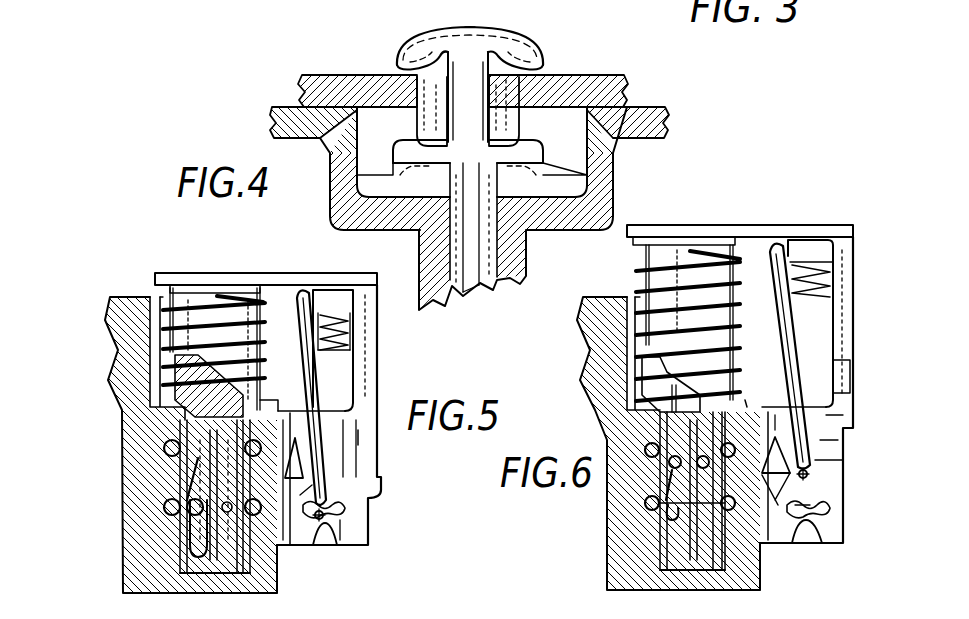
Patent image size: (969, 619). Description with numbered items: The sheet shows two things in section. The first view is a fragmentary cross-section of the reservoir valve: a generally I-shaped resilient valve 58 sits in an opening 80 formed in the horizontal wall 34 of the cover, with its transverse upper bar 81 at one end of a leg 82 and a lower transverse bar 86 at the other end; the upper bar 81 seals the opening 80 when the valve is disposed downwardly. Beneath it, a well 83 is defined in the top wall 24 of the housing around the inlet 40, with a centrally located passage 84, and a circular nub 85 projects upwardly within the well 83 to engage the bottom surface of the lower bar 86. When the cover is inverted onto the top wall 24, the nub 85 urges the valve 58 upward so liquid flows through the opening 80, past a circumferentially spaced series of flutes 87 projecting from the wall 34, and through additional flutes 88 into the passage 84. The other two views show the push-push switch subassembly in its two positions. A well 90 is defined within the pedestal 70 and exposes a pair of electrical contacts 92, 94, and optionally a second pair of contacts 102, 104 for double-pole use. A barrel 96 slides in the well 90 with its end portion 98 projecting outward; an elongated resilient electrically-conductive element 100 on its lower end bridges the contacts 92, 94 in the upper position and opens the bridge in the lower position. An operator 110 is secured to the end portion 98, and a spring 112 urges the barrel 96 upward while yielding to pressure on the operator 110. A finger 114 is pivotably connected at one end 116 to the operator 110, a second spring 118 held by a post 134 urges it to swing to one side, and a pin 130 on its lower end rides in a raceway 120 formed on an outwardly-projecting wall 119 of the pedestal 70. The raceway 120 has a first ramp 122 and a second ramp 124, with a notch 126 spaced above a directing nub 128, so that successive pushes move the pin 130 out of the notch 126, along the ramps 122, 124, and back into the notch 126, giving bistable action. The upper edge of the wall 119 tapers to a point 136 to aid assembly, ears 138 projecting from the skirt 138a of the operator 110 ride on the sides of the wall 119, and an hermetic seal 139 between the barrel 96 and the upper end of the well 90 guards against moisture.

In FIG. 4, the top wall 24 is at (650, 142).
In FIG. 4, the horizontal wall 34 is at (600, 75).
In FIG. 4, the inlet 40 is at (632, 107).
In FIG. 4, the valve 58 is at (391, 38).
In FIG. 5, the pedestal 70 is at (280, 565).
In FIG. 6, the pedestal 70 is at (760, 583).
In FIG. 4, the opening 80 is at (420, 73).
In FIG. 4, the transverse upper bar 81 is at (526, 52).
In FIG. 4, the leg 82 is at (477, 100).
In FIG. 4, the well 83 is at (611, 188).
In FIG. 4, the passage 84 is at (482, 284).
In FIG. 4, the circular nub 85 is at (510, 172).
In FIG. 4, the lower transverse bar 86 is at (420, 172).
In FIG. 4, the flutes 87 is at (380, 174).
In FIG. 4, the additional flutes 88 is at (478, 209).
In FIG. 5, the well 90 is at (180, 568).
In FIG. 6, the well 90 is at (663, 560).
In FIG. 5, the electrical contact 92 is at (165, 448).
In FIG. 6, the electrical contact 92 is at (645, 448).
In FIG. 5, the electrical contact 94 is at (166, 502).
In FIG. 6, the electrical contact 94 is at (645, 505).
In FIG. 5, the barrel 96 is at (215, 496).
In FIG. 6, the barrel 96 is at (692, 491).
In FIG. 5, the end portion 98 is at (170, 292).
In FIG. 6, the end portion 98 is at (640, 263).
In FIG. 5, the electrically-conductive element 100 is at (185, 530).
In FIG. 6, the electrically-conductive element 100 is at (663, 517).
In FIG. 5, the contact 102 is at (268, 383).
In FIG. 6, the contact 102 is at (745, 400).
In FIG. 5, the contact 104 is at (280, 585).
In FIG. 6, the contact 104 is at (760, 565).
In FIG. 5, the operator 110 is at (260, 272).
In FIG. 6, the operator 110 is at (707, 225).
In FIG. 5, the spring 112 is at (160, 296).
In FIG. 6, the spring 112 is at (637, 291).
In FIG. 5, the finger 114 is at (313, 385).
In FIG. 6, the finger 114 is at (781, 317).
In FIG. 5, the end 116 is at (298, 290).
In FIG. 6, the end 116 is at (783, 242).
In FIG. 5, the second spring 118 is at (350, 356).
In FIG. 6, the second spring 118 is at (815, 262).
In FIG. 5, the outwardly-projecting wall 119 is at (370, 535).
In FIG. 6, the outwardly-projecting wall 119 is at (833, 517).
In FIG. 6, the raceway 120 is at (826, 520).
In FIG. 5, the first ramp 122 is at (305, 485).
In FIG. 6, the first ramp 122 is at (803, 480).
In FIG. 5, the second ramp 124 is at (345, 506).
In FIG. 6, the second ramp 124 is at (795, 490).
In FIG. 5, the notch 126 is at (340, 521).
In FIG. 6, the notch 126 is at (810, 512).
In FIG. 5, the directing nub 128 is at (326, 545).
In FIG. 6, the directing nub 128 is at (795, 545).
In FIG. 6, the pin 130 is at (842, 460).
In FIG. 5, the post 134 is at (323, 348).
In FIG. 6, the post 134 is at (812, 298).
In FIG. 6, the point 136 is at (830, 400).
In FIG. 5, the ears 138 is at (372, 435).
In FIG. 6, the ears 138 is at (843, 378).
In FIG. 5, the skirt 138a is at (376, 371).
In FIG. 6, the skirt 138a is at (880, 205).
In FIG. 5, the hermetic seal 139 is at (170, 373).
In FIG. 6, the hermetic seal 139 is at (671, 384).